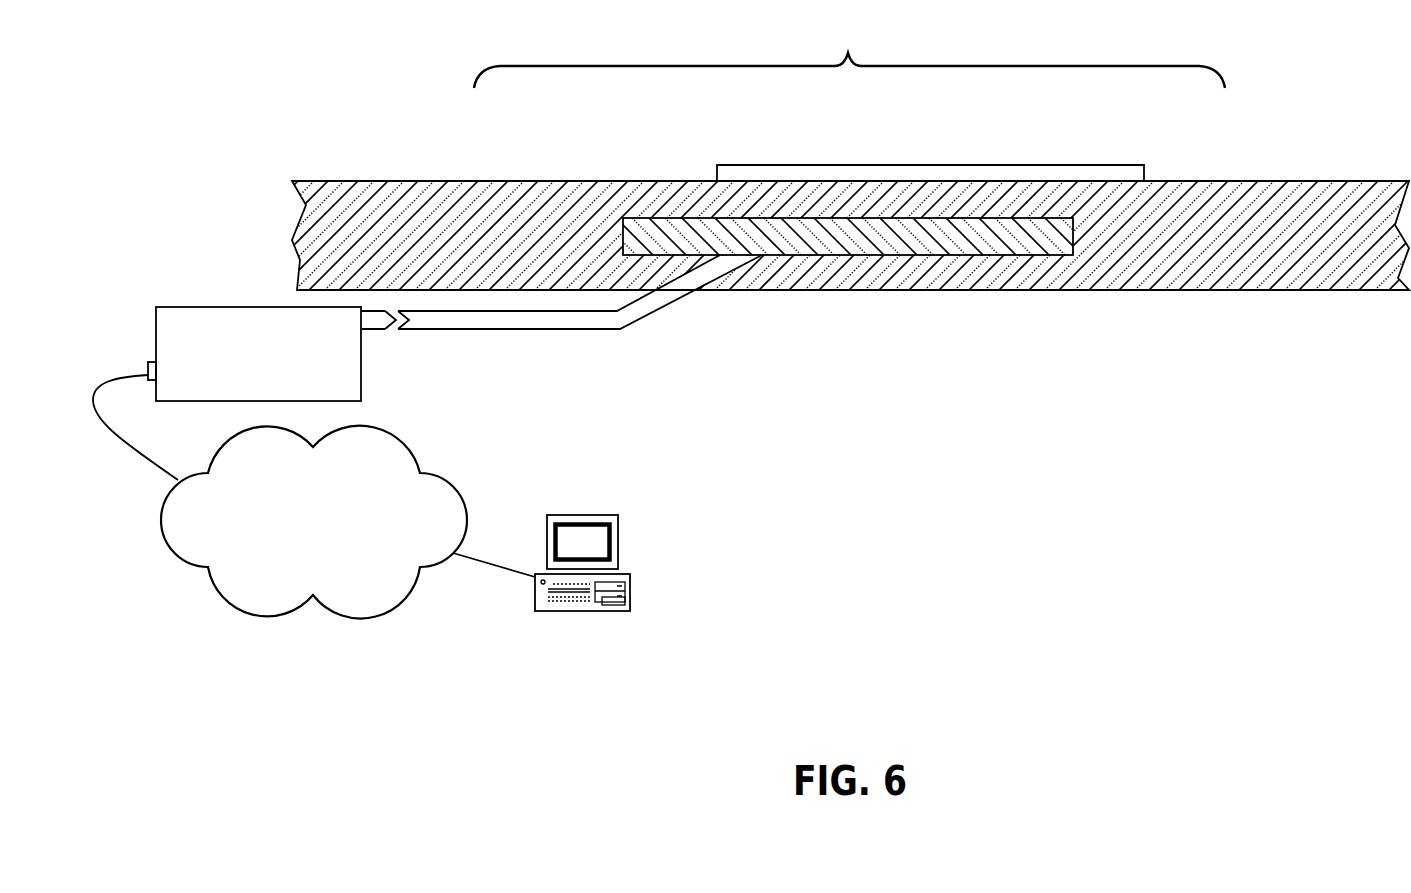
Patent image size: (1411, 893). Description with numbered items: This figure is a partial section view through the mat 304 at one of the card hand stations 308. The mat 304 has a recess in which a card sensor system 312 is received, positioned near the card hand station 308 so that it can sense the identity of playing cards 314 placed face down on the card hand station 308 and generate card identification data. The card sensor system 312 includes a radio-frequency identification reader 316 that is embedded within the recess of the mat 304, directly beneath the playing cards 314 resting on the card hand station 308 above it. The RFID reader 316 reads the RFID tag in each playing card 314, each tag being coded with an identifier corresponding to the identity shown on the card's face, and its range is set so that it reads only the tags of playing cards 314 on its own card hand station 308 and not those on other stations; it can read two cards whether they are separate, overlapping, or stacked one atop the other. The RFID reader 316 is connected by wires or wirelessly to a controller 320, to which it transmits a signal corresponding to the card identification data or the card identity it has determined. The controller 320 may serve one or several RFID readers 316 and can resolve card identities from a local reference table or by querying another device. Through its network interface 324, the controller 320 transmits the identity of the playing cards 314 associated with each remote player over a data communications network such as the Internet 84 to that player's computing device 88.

The mat 304 is at (1242, 273).
The card hand station 308 is at (849, 55).
The card sensor system 312 is at (889, 290).
The playing card 314 is at (867, 165).
The radio-frequency identification (RFID) reader 316 is at (980, 237).
The controller 320 is at (243, 308).
The network interface 324 is at (149, 362).
The Internet 84 is at (314, 522).
The computing device 88 is at (620, 530).